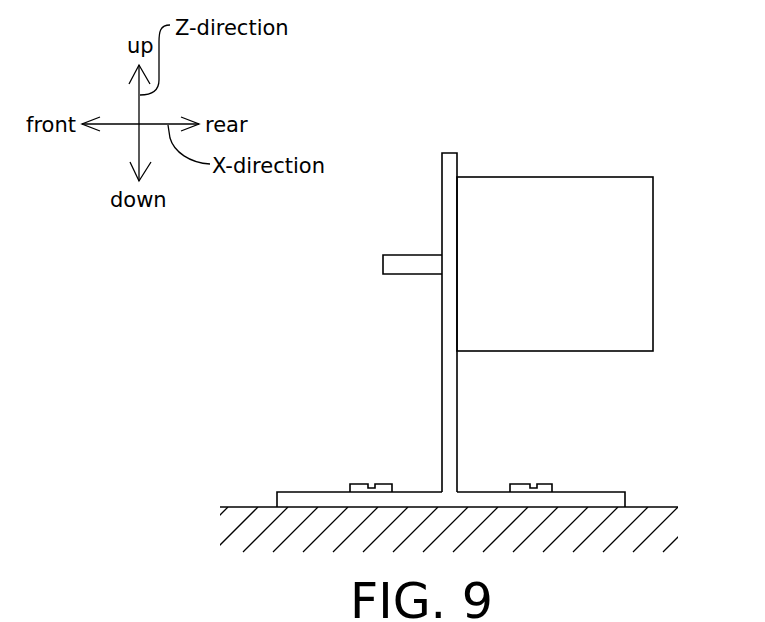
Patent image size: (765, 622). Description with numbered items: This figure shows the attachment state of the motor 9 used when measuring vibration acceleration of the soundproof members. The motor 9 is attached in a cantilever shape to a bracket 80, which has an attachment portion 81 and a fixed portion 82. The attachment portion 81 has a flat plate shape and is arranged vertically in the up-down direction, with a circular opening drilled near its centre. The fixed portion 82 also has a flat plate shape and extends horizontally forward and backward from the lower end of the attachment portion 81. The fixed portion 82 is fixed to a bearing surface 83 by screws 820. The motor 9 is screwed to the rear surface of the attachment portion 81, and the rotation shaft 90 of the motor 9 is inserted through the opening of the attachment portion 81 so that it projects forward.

The motor 9 is at (593, 203).
The bracket 80 is at (450, 168).
The attachment portion 81 is at (450, 302).
The fixed portion 82 is at (603, 498).
The screws 820 is at (541, 485).
The bearing surface 83 is at (260, 522).
The rotation shaft 90 is at (413, 262).